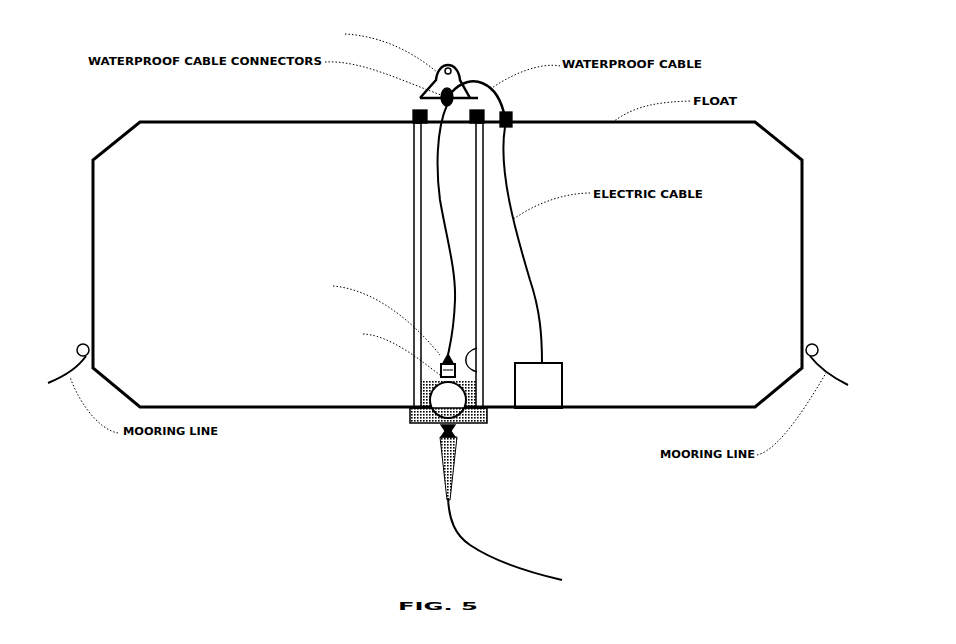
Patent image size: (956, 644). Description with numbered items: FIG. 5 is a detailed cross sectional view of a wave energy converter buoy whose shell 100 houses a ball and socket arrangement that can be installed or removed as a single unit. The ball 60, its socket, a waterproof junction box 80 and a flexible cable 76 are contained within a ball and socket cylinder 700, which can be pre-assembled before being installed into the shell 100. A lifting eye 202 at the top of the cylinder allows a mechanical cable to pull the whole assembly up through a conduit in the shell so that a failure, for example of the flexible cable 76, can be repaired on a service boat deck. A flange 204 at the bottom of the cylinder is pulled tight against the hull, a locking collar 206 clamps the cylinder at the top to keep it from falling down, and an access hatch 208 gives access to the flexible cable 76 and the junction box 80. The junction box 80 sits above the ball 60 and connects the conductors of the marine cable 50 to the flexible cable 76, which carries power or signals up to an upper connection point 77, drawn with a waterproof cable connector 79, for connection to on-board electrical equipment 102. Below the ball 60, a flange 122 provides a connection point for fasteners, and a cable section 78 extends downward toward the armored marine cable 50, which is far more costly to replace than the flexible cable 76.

The shell 100 is at (806, 213).
The ball and socket cylinder 700 is at (415, 200).
The lifting eye 202 is at (455, 68).
The upper connection point 77 is at (455, 90).
The waterproof cable connector 79 is at (510, 118).
The locking collar 206 is at (413, 115).
The flexible cable 76 is at (435, 163).
The access hatch 208 is at (470, 355).
The waterproof junction box 80 is at (441, 365).
The ball 60 is at (436, 398).
The flange 204 is at (488, 418).
The electrical equipment 102 is at (565, 363).
The flange 122 is at (441, 430).
The cable 78 is at (442, 468).
The marine cable 50 is at (470, 538).